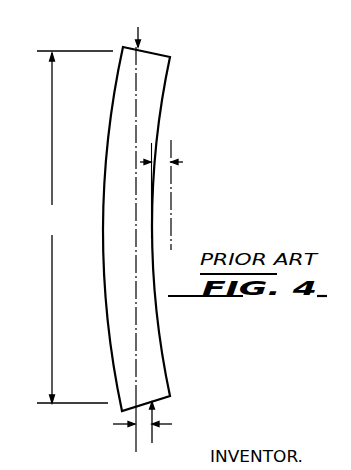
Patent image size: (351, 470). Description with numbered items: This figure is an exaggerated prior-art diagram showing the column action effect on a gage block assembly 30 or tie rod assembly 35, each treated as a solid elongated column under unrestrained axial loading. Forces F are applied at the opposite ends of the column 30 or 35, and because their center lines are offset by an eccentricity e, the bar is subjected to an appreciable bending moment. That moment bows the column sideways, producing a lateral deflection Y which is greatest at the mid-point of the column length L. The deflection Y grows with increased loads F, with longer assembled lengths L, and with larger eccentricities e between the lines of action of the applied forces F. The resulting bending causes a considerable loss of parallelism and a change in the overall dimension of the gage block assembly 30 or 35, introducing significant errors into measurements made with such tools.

The gage block assembly 30 is at (176, 229).
The tie rod assembly 35 is at (250, 93).
The forces F is at (143, 234).
The gage block assembled length L is at (75, 227).
The lateral deflection Y is at (170, 165).
The eccentricity e is at (135, 426).